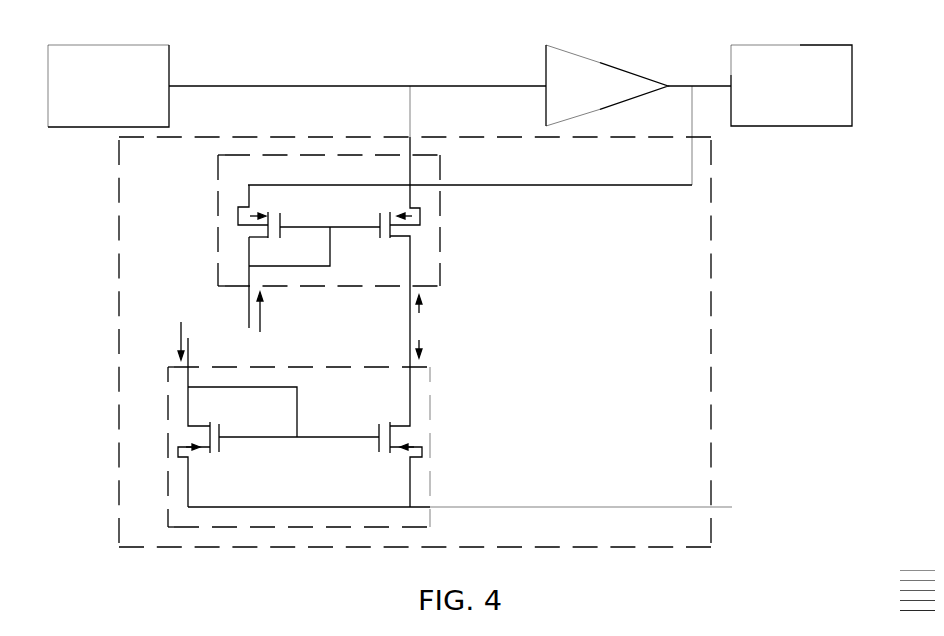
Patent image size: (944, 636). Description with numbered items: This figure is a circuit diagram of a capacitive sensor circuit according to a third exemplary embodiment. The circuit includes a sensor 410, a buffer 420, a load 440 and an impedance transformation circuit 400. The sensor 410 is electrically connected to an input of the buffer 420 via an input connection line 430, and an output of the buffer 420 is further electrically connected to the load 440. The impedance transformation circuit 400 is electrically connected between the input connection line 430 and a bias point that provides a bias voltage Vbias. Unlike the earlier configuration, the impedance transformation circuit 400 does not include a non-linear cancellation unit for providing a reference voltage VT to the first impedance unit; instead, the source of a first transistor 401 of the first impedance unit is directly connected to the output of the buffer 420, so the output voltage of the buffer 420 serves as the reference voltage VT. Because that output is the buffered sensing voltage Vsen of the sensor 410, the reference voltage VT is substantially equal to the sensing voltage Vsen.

The impedance transformation circuit 400 is at (458, 316).
The first transistor 401 is at (213, 236).
The sensor 410 is at (144, 71).
The buffer 420 is at (638, 72).
The input connection line 430 is at (357, 60).
The load 440 is at (801, 113).